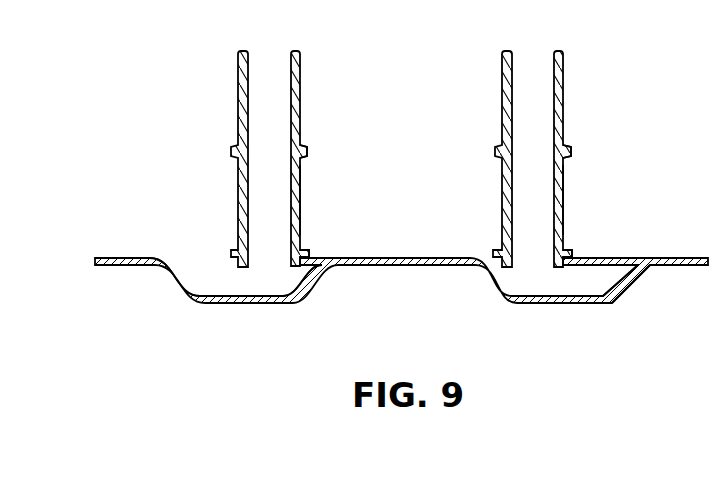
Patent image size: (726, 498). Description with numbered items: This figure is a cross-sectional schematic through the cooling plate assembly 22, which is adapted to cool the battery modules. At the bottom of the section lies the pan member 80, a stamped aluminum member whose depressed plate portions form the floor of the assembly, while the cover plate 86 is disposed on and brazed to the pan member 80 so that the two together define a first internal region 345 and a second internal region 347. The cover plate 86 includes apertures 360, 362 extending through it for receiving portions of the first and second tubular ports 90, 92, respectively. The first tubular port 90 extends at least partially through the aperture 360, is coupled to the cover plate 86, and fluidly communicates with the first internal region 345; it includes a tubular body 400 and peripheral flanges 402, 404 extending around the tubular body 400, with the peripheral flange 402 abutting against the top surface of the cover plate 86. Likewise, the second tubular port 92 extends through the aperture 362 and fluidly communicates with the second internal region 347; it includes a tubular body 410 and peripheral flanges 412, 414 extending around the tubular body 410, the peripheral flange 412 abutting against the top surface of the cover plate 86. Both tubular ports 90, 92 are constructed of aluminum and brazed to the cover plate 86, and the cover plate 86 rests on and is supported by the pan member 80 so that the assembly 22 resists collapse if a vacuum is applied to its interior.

The cooling plate assembly 22 is at (650, 64).
The second tubular port 92 is at (302, 92).
The first tubular port 90 is at (567, 92).
The peripheral flange 414 is at (307, 150).
The tubular body 410 is at (300, 200).
The peripheral flange 412 is at (305, 253).
The peripheral flange 404 is at (572, 150).
The tubular body 400 is at (565, 200).
The peripheral flange 402 is at (568, 253).
The cover plate 86 is at (152, 258).
The pan member 80 is at (173, 287).
The second internal region 347 is at (214, 280).
The aperture 362 is at (306, 266).
The aperture 360 is at (510, 263).
The first internal region 345 is at (598, 277).